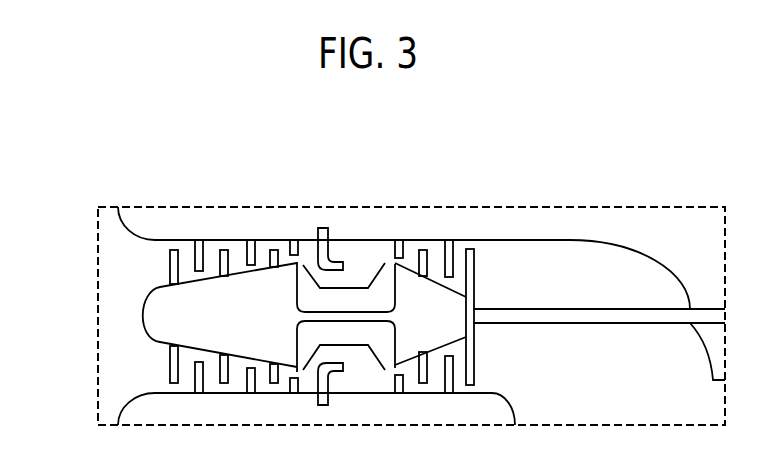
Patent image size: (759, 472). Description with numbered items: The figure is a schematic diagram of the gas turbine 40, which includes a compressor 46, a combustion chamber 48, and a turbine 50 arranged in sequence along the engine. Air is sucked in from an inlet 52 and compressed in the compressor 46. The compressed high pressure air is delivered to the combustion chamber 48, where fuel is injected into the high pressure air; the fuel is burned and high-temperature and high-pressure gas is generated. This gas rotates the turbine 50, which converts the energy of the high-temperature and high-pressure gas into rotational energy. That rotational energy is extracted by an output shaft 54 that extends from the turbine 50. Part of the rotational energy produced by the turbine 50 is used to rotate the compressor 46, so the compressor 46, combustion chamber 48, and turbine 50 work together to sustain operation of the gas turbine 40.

The gas turbine 40 is at (263, 122).
The compressor 46 is at (210, 290).
The combustion chamber 48 is at (352, 297).
The turbine 50 is at (437, 297).
The inlet 52 is at (121, 409).
The output shaft 54 is at (513, 309).